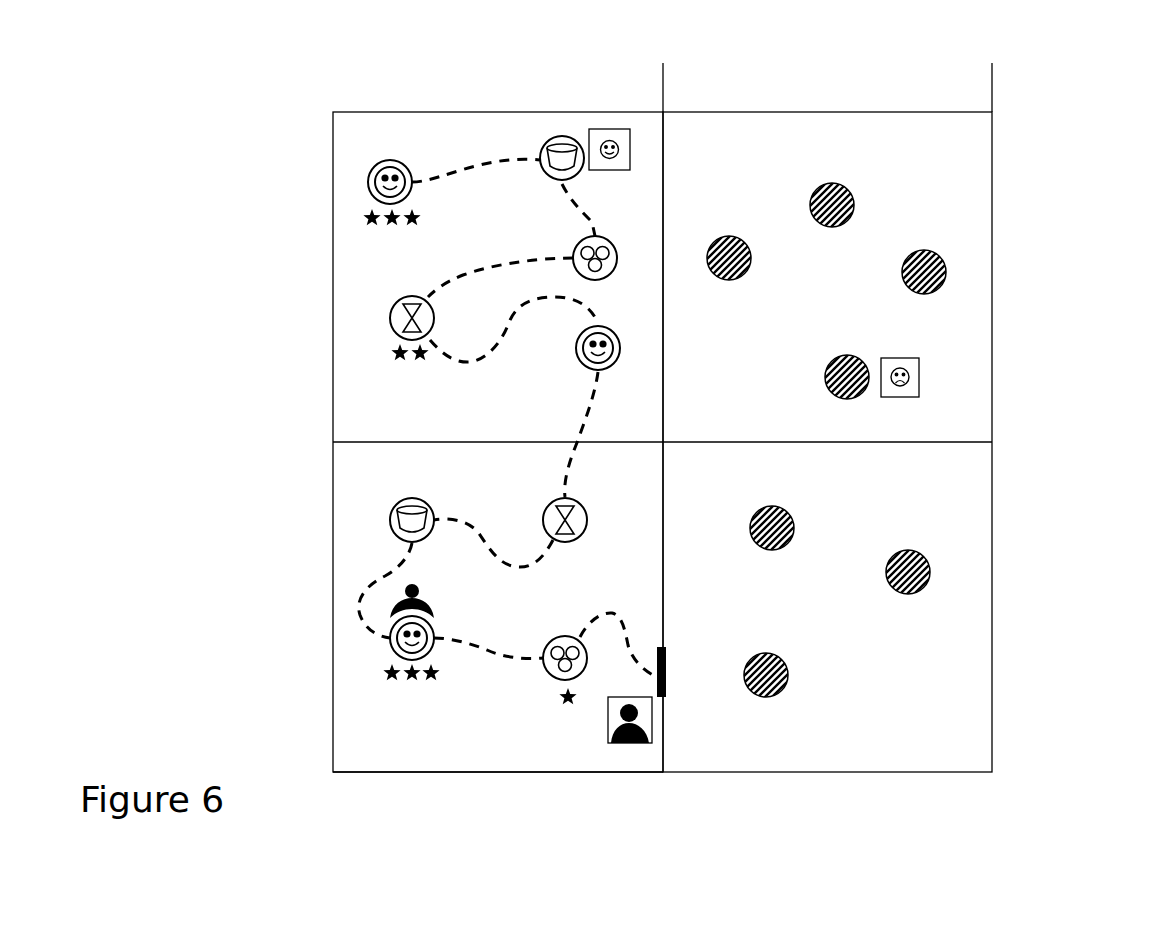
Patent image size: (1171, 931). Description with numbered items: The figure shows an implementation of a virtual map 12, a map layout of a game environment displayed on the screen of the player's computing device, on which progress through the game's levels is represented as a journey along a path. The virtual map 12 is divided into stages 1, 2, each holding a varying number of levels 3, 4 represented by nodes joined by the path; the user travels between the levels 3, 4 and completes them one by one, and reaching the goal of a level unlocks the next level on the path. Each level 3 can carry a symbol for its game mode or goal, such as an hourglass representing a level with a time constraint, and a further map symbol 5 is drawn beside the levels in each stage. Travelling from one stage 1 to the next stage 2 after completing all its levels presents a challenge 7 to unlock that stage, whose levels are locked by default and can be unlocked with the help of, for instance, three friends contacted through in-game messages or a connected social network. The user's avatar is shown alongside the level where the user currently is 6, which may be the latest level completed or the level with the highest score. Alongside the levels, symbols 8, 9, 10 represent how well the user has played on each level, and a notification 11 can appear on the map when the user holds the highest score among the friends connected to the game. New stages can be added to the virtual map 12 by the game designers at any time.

The stage 1 is at (506, 110).
The stage 2 is at (1005, 317).
The level 3 is at (388, 320).
The level 4 is at (992, 273).
The mood indicator 5 is at (608, 123).
The level where the user is 6 is at (618, 772).
The challenge 7 is at (705, 772).
The symbol representing how well the user has played 8 is at (355, 218).
The symbol representing how well the user has played 9 is at (380, 356).
The symbol representing how well the user has played 10 is at (566, 773).
The notification 11 is at (332, 601).
The virtual map 12 is at (996, 85).